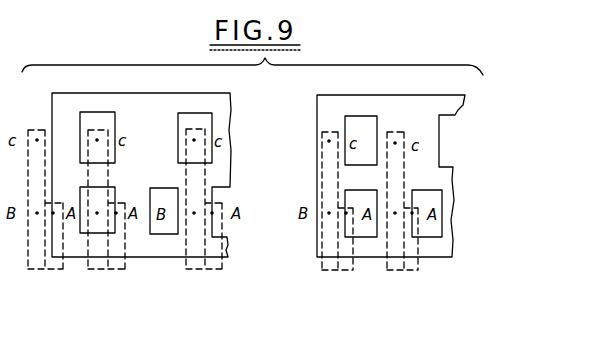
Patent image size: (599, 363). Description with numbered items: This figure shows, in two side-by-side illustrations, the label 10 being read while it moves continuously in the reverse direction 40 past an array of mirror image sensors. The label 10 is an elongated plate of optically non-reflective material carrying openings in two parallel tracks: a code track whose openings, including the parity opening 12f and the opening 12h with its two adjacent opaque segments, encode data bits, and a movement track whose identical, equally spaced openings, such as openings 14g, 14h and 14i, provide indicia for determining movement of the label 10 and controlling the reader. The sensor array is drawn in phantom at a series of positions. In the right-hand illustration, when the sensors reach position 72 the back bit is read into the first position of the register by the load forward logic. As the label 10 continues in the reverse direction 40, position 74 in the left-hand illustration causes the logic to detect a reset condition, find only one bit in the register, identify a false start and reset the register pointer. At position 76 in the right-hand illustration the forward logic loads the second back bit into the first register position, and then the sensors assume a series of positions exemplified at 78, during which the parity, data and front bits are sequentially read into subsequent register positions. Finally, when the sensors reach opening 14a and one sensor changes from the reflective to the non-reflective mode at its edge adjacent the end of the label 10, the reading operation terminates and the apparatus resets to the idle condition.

The label 10 is at (40, 119).
The opening 12h is at (99, 113).
The opening 12f is at (197, 113).
The opening 14a is at (25, 260).
The opening 14g is at (220, 190).
The opening 14h is at (178, 211).
The opening 14i is at (98, 231).
The reverse direction 40 is at (168, 278).
The sensor position 72 is at (333, 271).
The sensor position 74 is at (83, 268).
The sensor position 76 is at (423, 267).
The sensor positions 78 is at (208, 176).